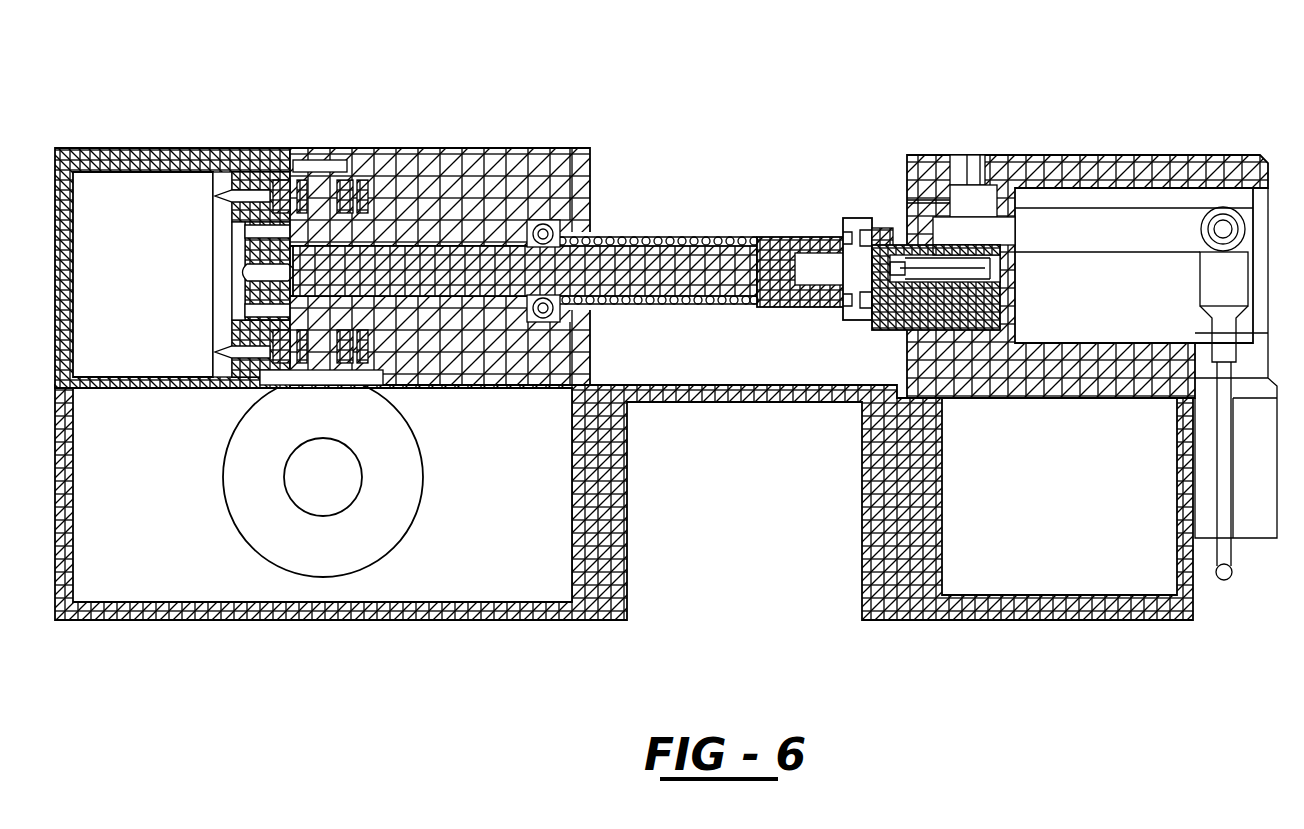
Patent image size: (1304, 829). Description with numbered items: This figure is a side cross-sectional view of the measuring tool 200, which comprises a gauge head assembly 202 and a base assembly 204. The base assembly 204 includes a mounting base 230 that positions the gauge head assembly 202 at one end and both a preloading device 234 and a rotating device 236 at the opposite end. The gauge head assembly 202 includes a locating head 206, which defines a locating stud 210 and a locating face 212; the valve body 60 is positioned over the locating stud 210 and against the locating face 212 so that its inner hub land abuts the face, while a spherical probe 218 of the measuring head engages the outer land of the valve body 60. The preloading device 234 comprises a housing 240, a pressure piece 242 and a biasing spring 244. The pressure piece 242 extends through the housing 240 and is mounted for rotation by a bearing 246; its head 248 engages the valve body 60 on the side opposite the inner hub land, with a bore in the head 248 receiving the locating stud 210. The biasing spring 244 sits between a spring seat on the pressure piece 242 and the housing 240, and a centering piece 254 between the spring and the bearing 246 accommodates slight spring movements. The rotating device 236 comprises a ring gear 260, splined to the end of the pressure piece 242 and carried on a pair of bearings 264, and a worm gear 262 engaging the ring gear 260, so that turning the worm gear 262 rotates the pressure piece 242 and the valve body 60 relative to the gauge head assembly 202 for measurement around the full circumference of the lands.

The measuring tool 200 is at (566, 78).
The gauge head assembly 202 is at (1030, 105).
The base assembly 204 is at (353, 650).
The locating head 206 is at (973, 318).
The locating stud 210 is at (825, 273).
The locating face 212 is at (887, 306).
The spherical probe 218 is at (880, 225).
The mounting base 230 is at (428, 612).
The preloading device 234 is at (693, 210).
The rotating device 236 is at (195, 553).
The housing 240 is at (403, 180).
The pressure piece 242 is at (650, 284).
The biasing spring 244 is at (610, 240).
The bearing 246 is at (545, 312).
The head 248 is at (797, 230).
The centering piece 254 is at (600, 302).
The ring gear 260 is at (318, 183).
The worm gear 262 is at (243, 430).
The bearings 264 is at (290, 177).
The valve body 60 is at (820, 189).